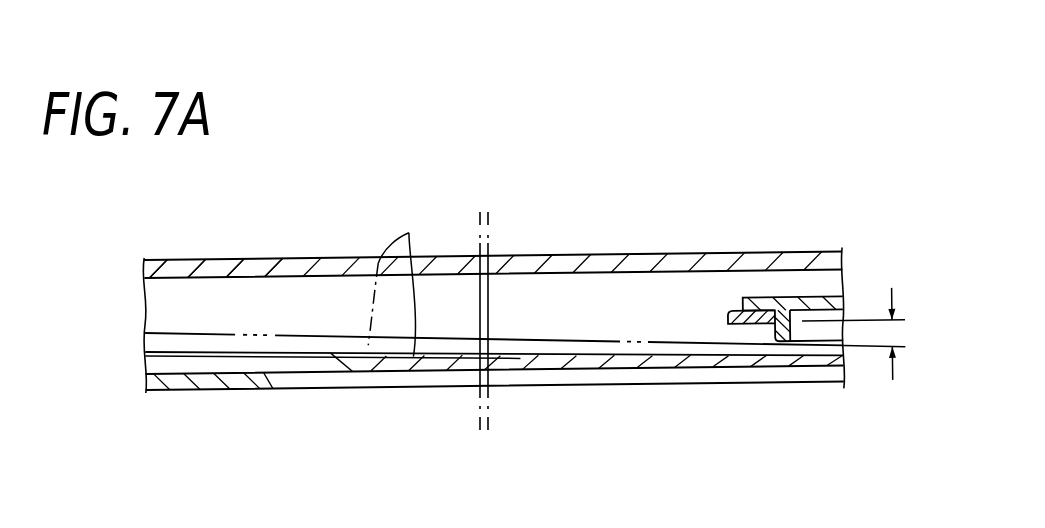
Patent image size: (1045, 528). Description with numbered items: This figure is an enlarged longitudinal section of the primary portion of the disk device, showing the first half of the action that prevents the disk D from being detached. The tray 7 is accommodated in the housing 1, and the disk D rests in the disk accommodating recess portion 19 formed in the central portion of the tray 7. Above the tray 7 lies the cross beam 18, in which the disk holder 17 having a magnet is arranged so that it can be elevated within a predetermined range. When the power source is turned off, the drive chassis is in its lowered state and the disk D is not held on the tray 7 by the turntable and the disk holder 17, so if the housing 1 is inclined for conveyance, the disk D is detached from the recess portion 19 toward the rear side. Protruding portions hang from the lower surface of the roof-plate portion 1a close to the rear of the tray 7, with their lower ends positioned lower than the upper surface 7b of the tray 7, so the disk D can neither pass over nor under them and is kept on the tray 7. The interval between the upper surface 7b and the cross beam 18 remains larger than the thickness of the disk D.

The housing 1 is at (598, 263).
The roof-plate portion 1a is at (265, 270).
The tray 7 is at (495, 378).
The upper surface of the tray 7b is at (275, 354).
The disk holder 17 is at (805, 311).
The cross beam 18 is at (728, 322).
The disk accommodating recess portion 19 is at (357, 373).
The disk D is at (395, 279).